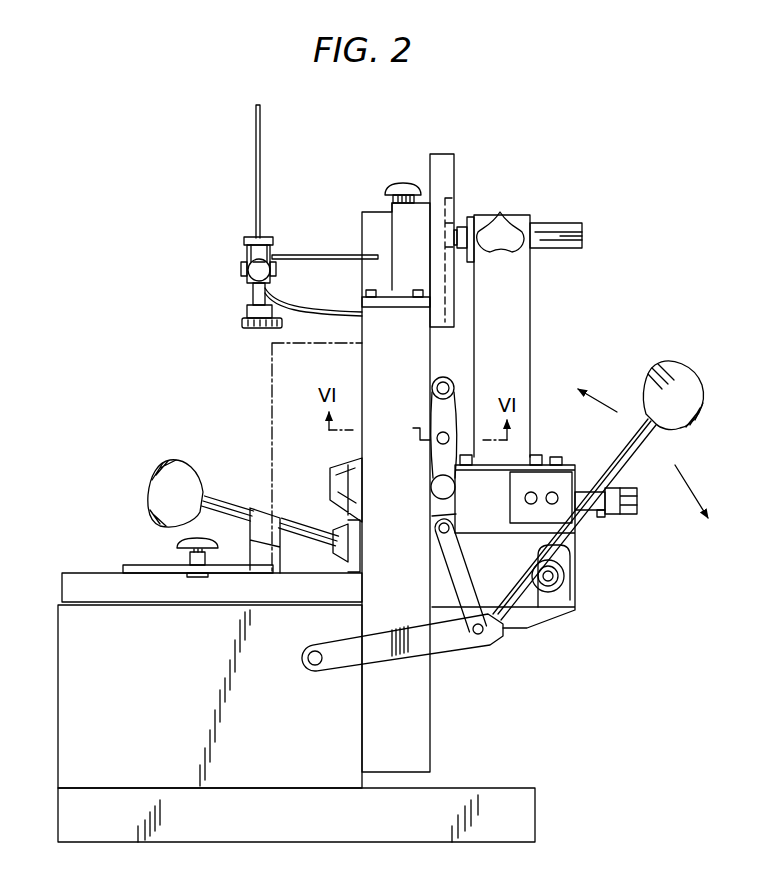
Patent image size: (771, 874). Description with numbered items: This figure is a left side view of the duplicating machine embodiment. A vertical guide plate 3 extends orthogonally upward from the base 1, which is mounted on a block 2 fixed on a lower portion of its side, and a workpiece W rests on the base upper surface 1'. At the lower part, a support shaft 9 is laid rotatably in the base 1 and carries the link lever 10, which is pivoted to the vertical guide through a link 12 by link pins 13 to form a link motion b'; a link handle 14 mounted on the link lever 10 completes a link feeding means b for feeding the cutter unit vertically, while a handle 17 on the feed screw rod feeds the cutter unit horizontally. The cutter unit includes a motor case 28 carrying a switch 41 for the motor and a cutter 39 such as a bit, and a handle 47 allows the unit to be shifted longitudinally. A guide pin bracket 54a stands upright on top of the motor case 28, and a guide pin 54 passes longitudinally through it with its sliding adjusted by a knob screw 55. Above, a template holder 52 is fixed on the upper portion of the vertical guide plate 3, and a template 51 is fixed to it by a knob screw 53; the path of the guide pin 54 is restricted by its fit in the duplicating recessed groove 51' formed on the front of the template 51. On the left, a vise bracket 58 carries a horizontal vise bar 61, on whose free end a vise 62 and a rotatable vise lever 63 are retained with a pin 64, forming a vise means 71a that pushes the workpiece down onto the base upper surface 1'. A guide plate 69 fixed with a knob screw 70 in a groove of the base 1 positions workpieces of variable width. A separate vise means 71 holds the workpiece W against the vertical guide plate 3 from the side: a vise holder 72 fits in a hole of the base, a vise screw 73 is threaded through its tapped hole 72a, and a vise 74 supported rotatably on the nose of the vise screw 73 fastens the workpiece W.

The base 1 is at (192, 696).
The base upper surface 1' is at (204, 572).
The block 2 is at (58, 812).
The vertical guide plate 3 is at (436, 723).
The support shaft 9 is at (305, 662).
The link lever 10 is at (340, 667).
The link 12 is at (470, 573).
The link pin 13 is at (450, 528).
The link handle 14 is at (645, 443).
The handle 17 is at (432, 405).
The motor case 28 is at (577, 577).
The cutter 39 is at (330, 470).
The switch 41 is at (518, 498).
The handle 47 is at (628, 514).
The template 51 is at (468, 231).
The duplicating recessed groove 51' is at (477, 244).
The template holder 52 is at (390, 200).
The knob screw 53 is at (472, 220).
The guide pin 54 is at (565, 225).
The guide pin bracket 54a is at (532, 298).
The knob screw 55 is at (505, 215).
The vise bracket 58 is at (318, 256).
The vise bar 61 is at (250, 284).
The vise 62 is at (243, 321).
The vise lever 63 is at (256, 157).
The pin 64 is at (247, 264).
The guide plate 69 is at (138, 565).
The knob screw 70 is at (180, 543).
The vise means 71 is at (148, 473).
The vise means 71a is at (240, 268).
The vise holder 72 is at (256, 508).
The tapped hole 72a is at (278, 518).
The vise screw 73 is at (216, 497).
The vise 74 is at (343, 563).
The workpiece W is at (272, 372).
The link feeding means b is at (524, 655).
The link motion b' is at (464, 681).